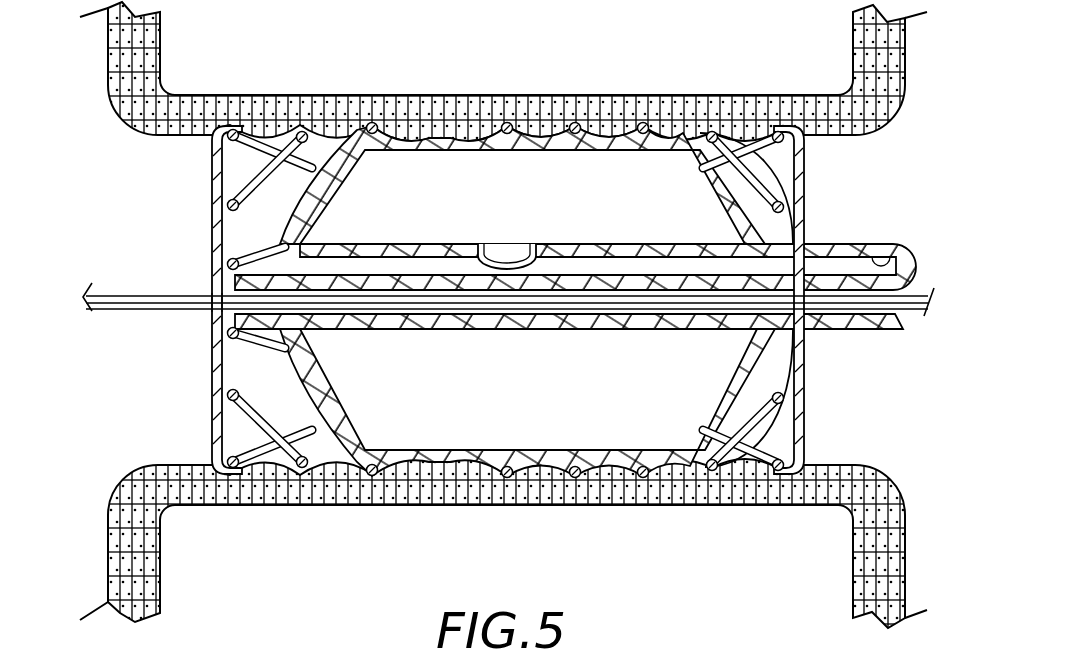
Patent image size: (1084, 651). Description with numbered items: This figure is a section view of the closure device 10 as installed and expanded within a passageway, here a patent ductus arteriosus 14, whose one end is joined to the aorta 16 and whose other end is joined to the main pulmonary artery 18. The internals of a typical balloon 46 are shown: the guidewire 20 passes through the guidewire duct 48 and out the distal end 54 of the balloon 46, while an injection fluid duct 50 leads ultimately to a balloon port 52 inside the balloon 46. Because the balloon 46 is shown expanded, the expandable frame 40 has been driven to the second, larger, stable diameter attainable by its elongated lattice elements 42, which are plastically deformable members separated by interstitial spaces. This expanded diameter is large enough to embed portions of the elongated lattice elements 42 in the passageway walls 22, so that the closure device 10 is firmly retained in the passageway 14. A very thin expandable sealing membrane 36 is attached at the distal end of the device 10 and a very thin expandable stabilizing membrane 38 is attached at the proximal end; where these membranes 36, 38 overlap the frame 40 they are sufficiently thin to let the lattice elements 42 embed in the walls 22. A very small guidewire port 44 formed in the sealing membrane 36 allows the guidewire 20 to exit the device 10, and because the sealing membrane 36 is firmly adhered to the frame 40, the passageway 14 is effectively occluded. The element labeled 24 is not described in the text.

The closure device 10 is at (506, 320).
The patent ductus arteriosus 14 is at (503, 79).
The aorta 16 is at (503, 543).
The main pulmonary artery 18 is at (923, 567).
The guidewire 20 is at (138, 310).
The passageway walls 22 is at (352, 100).
The tube 24 is at (582, 179).
The sealing membrane 36 is at (163, 300).
The stabilizing membrane 38 is at (806, 413).
The expandable frame 40 is at (266, 145).
The elongated structural members 42 is at (645, 128).
The guidewire port 44 is at (208, 302).
The balloon 46 is at (612, 462).
The guidewire duct 48 is at (858, 302).
The injection fluid duct 50 is at (890, 268).
The balloon port 52 is at (507, 255).
The distal end of the balloon 54 is at (235, 287).